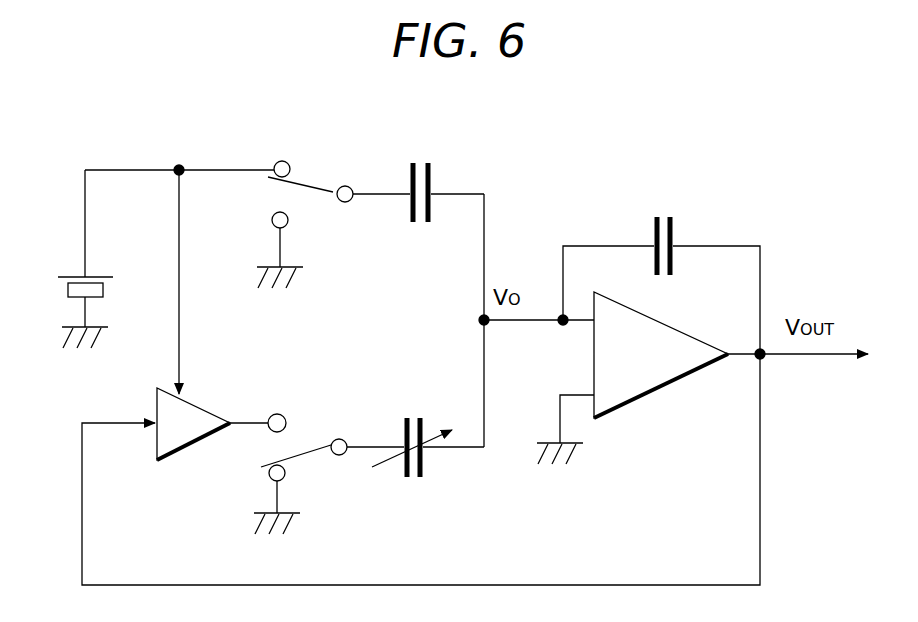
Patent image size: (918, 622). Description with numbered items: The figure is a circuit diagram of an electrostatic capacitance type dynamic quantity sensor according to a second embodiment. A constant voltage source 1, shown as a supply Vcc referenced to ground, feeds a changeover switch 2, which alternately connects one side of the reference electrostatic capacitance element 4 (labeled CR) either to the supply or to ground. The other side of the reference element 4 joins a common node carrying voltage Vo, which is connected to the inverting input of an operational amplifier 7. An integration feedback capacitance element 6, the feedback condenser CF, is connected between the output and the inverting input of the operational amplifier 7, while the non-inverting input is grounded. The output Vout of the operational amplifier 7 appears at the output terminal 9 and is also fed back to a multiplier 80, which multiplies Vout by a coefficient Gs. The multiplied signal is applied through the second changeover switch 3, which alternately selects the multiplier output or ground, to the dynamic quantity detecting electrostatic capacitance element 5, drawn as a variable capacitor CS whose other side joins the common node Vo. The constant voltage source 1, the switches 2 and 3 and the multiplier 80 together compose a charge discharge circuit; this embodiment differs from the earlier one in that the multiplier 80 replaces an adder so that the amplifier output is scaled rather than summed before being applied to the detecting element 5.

The constant voltage source 1 is at (72, 273).
The changeover switch 2 is at (310, 183).
The changeover switch 3 is at (308, 458).
The reference electrostatic capacitance element 4 is at (432, 185).
The dynamic quantity detecting electrostatic capacitance element 5 is at (425, 452).
The integration feedback capacitance element 6 is at (680, 237).
The operational amplifier 7 is at (647, 397).
The output terminal 9 is at (843, 357).
The multiplier 80 is at (187, 448).